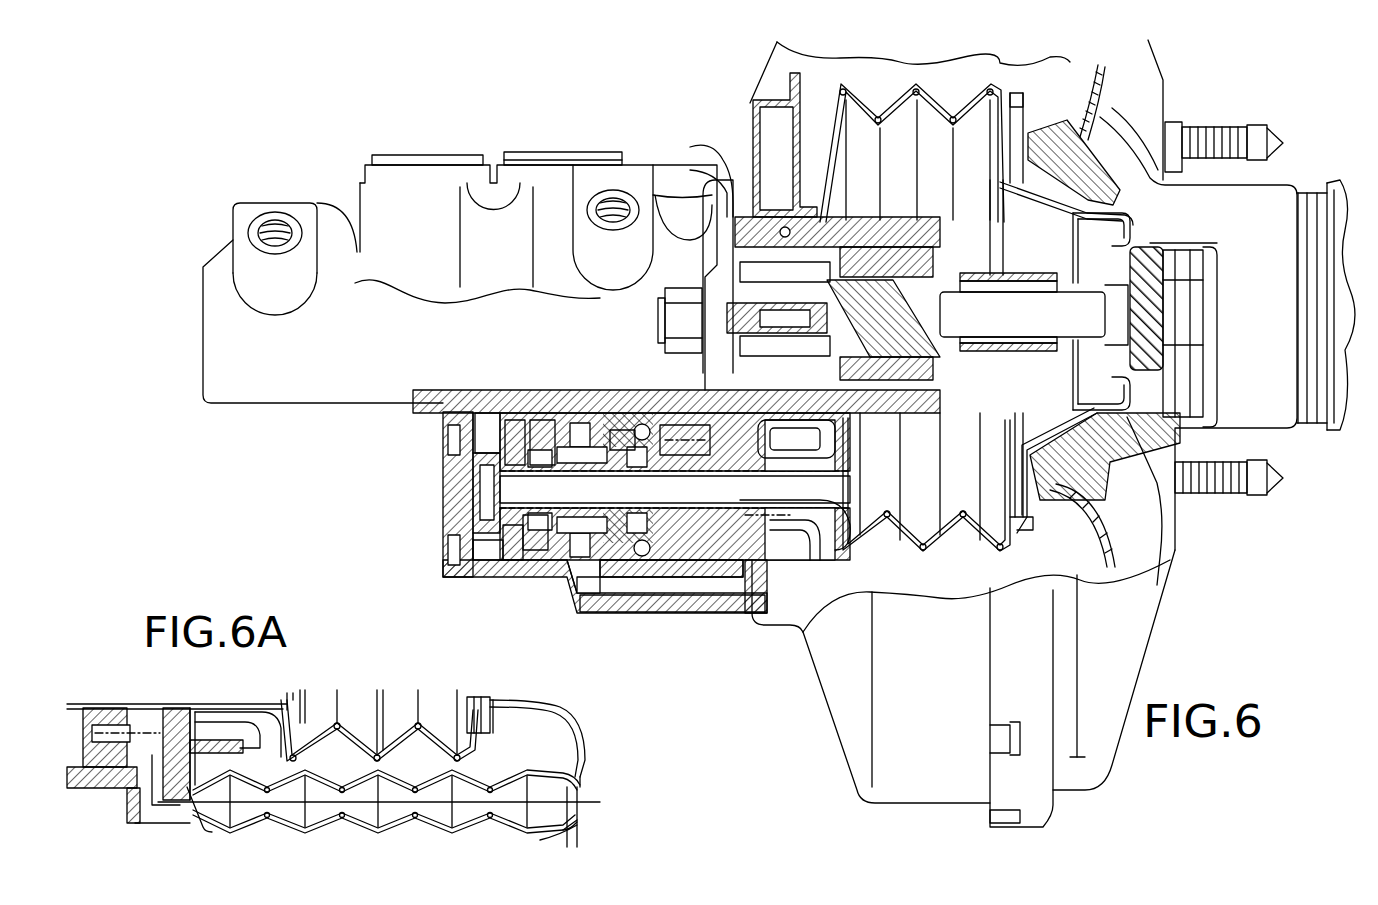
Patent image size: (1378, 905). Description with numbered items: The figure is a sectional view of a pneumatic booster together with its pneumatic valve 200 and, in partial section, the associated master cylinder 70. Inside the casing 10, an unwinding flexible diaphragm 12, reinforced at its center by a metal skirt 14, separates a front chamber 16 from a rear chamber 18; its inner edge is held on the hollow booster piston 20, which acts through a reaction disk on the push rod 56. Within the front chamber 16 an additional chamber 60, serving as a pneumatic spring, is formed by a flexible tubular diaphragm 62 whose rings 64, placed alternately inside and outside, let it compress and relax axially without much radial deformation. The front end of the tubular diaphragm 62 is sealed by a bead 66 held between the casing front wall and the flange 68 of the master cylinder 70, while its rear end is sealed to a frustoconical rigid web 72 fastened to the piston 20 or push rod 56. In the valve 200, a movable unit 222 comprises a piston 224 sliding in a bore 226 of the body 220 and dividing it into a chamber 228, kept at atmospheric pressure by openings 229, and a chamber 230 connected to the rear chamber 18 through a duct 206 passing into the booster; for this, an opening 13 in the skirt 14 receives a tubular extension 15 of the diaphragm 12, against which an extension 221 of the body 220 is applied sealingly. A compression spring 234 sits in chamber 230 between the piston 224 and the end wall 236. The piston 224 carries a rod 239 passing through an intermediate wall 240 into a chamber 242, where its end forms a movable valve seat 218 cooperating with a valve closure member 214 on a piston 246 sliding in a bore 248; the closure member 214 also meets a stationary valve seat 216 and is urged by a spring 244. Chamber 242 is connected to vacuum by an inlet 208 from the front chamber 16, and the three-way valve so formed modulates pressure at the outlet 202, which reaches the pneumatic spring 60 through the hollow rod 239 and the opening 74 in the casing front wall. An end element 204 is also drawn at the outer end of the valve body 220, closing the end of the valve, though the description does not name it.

In FIG. 6, the casing 10 is at (830, 675).
In FIG. 6A, the casing 10 is at (215, 840).
In FIG. 6, the unwinding flexible diaphragm 12 is at (1092, 127).
In FIG. 6A, the unwinding flexible diaphragm 12 is at (580, 738).
In FIG. 6A, the opening 13 is at (575, 802).
In FIG. 6, the skirt 14 is at (1087, 107).
In FIG. 6A, the skirt 14 is at (560, 703).
In FIG. 6A, the tubular extension 15 is at (465, 833).
In FIG. 6, the front chamber 16 is at (975, 574).
In FIG. 6A, the front chamber 16 is at (535, 754).
In FIG. 6, the rear chamber 18 is at (1133, 524).
In FIG. 6A, the rear chamber 18 is at (628, 784).
In FIG. 6, the hollow booster piston 20 is at (1050, 500).
In FIG. 6, the push rod 56 is at (1063, 323).
In FIG. 6, the additional chamber 60 is at (990, 434).
In FIG. 6A, the additional chamber 60 is at (372, 721).
In FIG. 6, the flexible tubular diaphragm 62 is at (955, 107).
In FIG. 6A, the flexible tubular diaphragm 62 is at (300, 720).
In FIG. 6, the rings 64 is at (880, 112).
In FIG. 6A, the rings 64 is at (430, 728).
In FIG. 6, the bead 66 is at (753, 200).
In FIG. 6, the flange 68 is at (722, 160).
In FIG. 6, the master cylinder 70 is at (300, 378).
In FIG. 6, the rigid web 72 is at (1165, 178).
In FIG. 6, the opening 74 is at (822, 440).
In FIG. 6, the pneumatic valve 200 is at (415, 563).
In FIG. 6, the outlet 202 is at (487, 497).
In FIG. 6, the end cap 204 is at (443, 435).
In FIG. 6A, the duct 206 is at (325, 815).
In FIG. 6, the inlet 208 is at (592, 590).
In FIG. 6, the valve closure member 214 is at (513, 553).
In FIG. 6, the stationary valve seat 216 is at (473, 548).
In FIG. 6, the movable valve seat 218 is at (487, 517).
In FIG. 6, the body 220 is at (672, 573).
In FIG. 6A, the body 220 is at (95, 790).
In FIG. 6, the extension 221 is at (650, 603).
In FIG. 6A, the extension 221 is at (142, 822).
In FIG. 6, the movable unit 222 is at (568, 582).
In FIG. 6, the piston 224 is at (665, 410).
In FIG. 6, the bore 226 is at (732, 567).
In FIG. 6, the chamber 228 is at (650, 390).
In FIG. 6, the openings 229 is at (623, 413).
In FIG. 6, the chamber 230 is at (745, 557).
In FIG. 6A, the chamber 230 is at (140, 718).
In FIG. 6, the compression spring 234 is at (755, 600).
In FIG. 6, the end wall 236 is at (777, 540).
In FIG. 6, the rod 239 is at (603, 413).
In FIG. 6, the intermediate wall 240 is at (613, 580).
In FIG. 6, the chamber 242 is at (540, 520).
In FIG. 6, the spring 244 is at (565, 413).
In FIG. 6, the piston 246 is at (515, 413).
In FIG. 6, the bore 248 is at (482, 413).